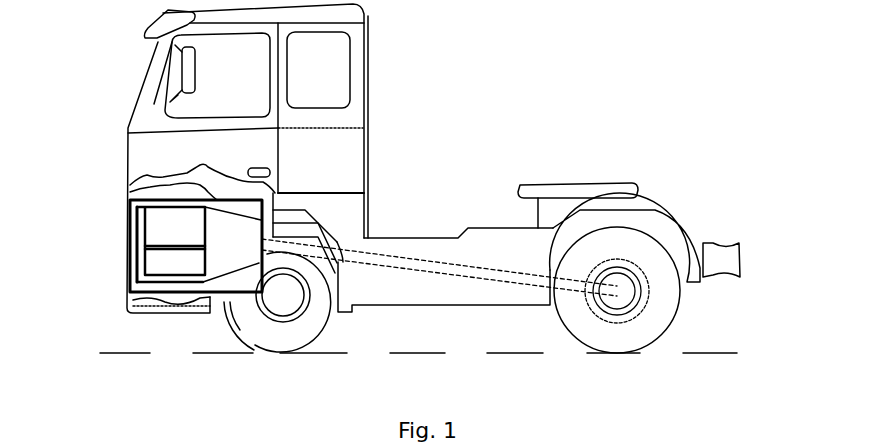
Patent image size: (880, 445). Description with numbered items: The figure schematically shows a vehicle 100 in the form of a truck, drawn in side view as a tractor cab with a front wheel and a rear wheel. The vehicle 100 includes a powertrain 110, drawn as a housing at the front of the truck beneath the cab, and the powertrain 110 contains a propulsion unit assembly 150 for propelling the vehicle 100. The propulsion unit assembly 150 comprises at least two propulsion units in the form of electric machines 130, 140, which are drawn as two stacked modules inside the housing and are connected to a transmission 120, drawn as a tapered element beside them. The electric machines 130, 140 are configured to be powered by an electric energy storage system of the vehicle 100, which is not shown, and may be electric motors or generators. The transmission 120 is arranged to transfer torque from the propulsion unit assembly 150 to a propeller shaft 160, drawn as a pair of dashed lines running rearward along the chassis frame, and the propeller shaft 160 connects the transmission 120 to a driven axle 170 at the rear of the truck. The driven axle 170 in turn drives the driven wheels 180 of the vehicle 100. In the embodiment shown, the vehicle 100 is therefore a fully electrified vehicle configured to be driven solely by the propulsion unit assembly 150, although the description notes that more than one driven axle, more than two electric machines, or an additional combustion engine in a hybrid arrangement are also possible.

The vehicle 100 is at (602, 130).
The powertrain 110 is at (130, 201).
The transmission 120 is at (247, 279).
The electric machine 130 is at (160, 221).
The electric machine 140 is at (160, 261).
The propulsion unit assembly 150 is at (195, 282).
The propeller shaft 160 is at (415, 257).
The driven axle 170 is at (620, 290).
The driven wheels 180 is at (615, 337).